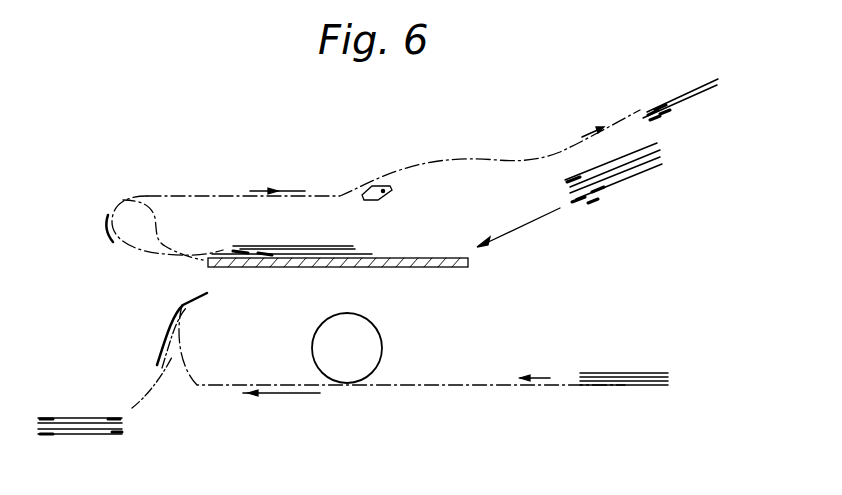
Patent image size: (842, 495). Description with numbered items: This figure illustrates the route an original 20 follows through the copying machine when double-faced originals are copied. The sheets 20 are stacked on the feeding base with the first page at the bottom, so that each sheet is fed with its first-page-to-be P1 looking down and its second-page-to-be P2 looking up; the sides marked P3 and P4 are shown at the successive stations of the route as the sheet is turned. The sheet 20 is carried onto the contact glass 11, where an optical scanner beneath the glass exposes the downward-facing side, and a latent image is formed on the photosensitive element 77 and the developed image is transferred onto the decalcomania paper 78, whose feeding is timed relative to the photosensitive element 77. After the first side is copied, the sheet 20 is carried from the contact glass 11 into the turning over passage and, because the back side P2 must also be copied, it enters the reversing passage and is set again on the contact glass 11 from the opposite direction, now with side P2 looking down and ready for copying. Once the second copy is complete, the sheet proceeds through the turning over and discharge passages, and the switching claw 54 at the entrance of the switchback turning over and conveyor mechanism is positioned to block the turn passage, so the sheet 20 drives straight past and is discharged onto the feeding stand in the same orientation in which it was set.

The contact glass 11 is at (428, 268).
The original 20 is at (282, 249).
The switching claw 54 is at (375, 200).
The photosensitive element 77 is at (382, 344).
The decalcomania paper 78 is at (603, 372).
The first-page-to-be P1 is at (263, 258).
The second-page-to-be P2 is at (237, 257).
The third position P3 is at (50, 418).
The fourth position P4 is at (115, 418).